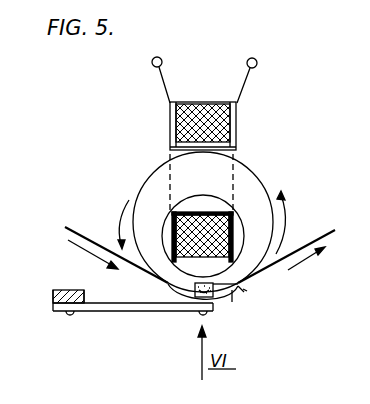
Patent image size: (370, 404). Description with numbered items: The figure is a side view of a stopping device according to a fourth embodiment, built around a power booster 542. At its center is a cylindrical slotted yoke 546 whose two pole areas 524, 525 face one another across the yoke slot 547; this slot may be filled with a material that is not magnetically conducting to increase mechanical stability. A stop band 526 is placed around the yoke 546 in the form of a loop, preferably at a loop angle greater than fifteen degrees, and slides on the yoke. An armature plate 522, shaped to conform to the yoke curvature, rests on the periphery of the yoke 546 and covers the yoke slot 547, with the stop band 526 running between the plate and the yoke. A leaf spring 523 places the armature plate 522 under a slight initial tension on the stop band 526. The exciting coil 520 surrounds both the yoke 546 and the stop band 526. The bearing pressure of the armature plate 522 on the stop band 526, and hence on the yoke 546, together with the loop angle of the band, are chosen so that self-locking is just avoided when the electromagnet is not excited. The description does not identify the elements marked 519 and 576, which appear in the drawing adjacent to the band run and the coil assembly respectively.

The first conveyor belt 519 is at (95, 241).
The exciting coil 520 is at (228, 132).
The armature plate 522 is at (240, 296).
The leaf spring 523 is at (98, 303).
The pole area 524 is at (228, 300).
The pole area 525 is at (170, 287).
The stop band 526 is at (308, 242).
The power booster 542 is at (245, 290).
The cylindrical slotted yoke 546 is at (253, 184).
The yoke slot 547 is at (197, 303).
The magnet holder 576 is at (237, 117).